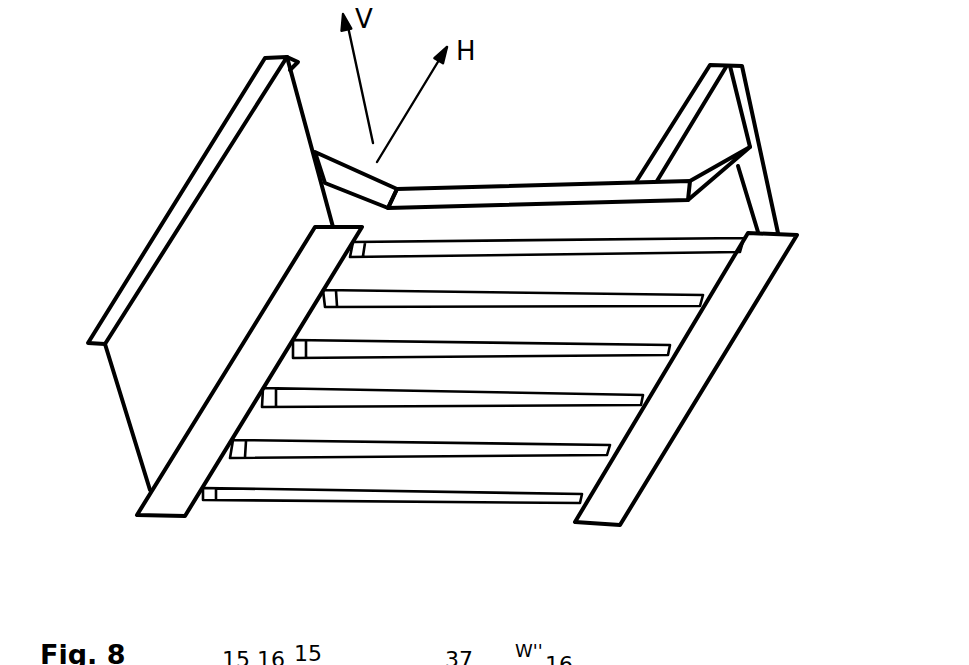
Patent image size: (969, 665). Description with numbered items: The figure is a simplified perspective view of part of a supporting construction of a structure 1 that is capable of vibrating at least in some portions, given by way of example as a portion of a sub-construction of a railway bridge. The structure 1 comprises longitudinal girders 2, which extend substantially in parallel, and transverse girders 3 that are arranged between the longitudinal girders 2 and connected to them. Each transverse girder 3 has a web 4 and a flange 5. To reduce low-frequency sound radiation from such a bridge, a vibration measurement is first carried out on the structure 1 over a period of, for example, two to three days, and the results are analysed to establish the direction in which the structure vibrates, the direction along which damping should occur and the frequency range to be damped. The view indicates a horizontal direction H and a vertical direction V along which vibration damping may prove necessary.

The structure 1 is at (655, 558).
The longitudinal girders 2 is at (152, 400).
The transverse girders 3 is at (427, 228).
The web 4 is at (513, 225).
The flange 5 is at (580, 195).